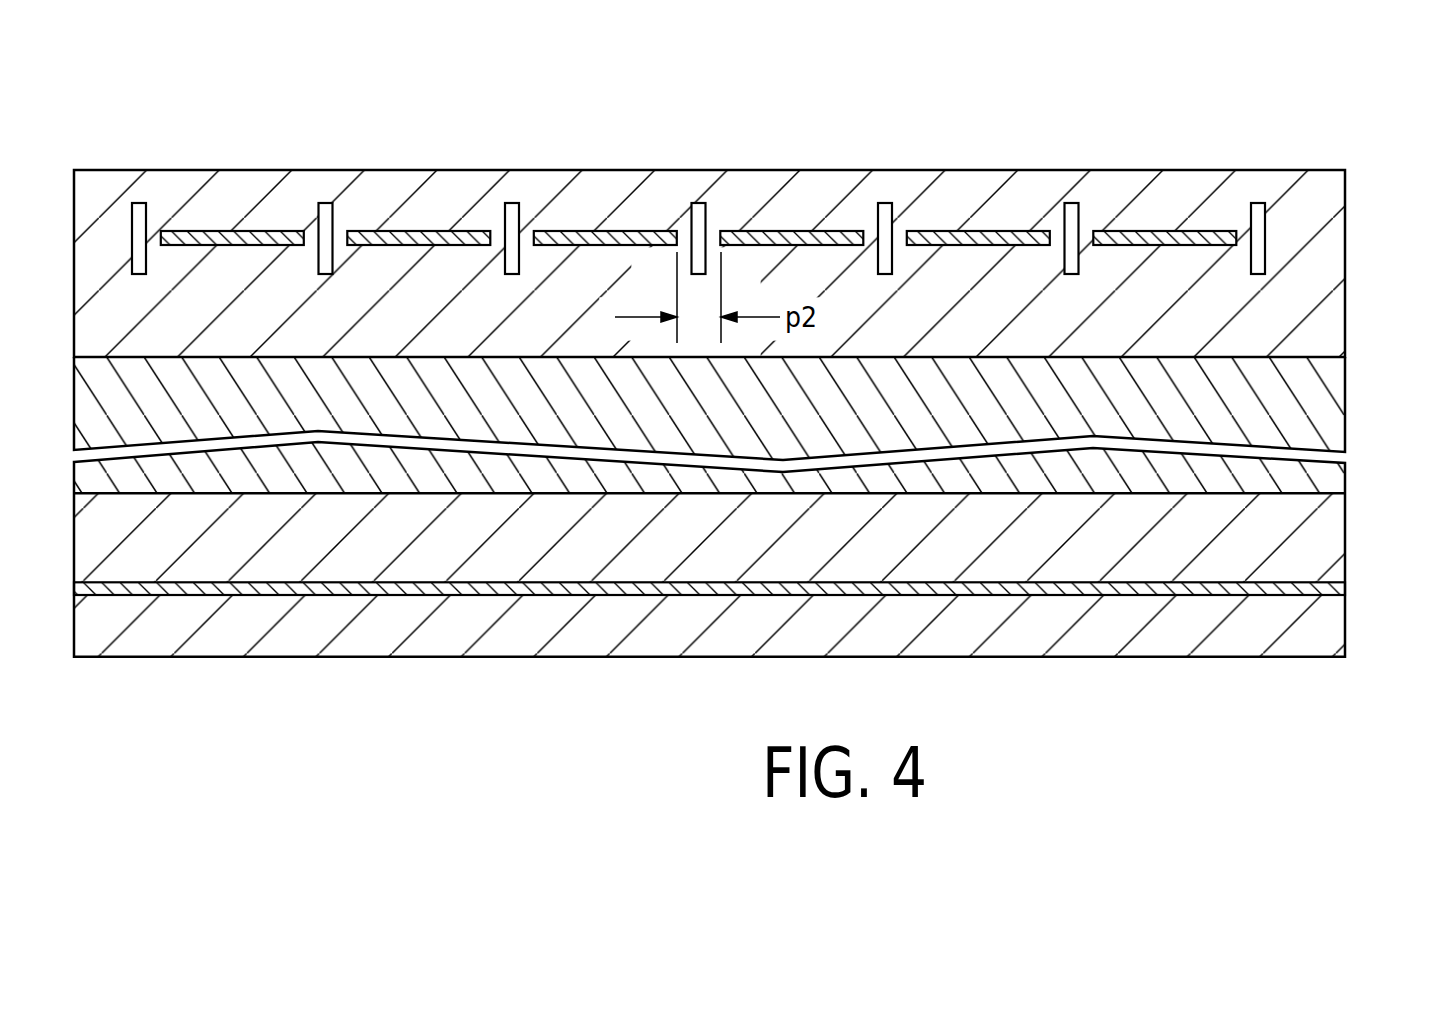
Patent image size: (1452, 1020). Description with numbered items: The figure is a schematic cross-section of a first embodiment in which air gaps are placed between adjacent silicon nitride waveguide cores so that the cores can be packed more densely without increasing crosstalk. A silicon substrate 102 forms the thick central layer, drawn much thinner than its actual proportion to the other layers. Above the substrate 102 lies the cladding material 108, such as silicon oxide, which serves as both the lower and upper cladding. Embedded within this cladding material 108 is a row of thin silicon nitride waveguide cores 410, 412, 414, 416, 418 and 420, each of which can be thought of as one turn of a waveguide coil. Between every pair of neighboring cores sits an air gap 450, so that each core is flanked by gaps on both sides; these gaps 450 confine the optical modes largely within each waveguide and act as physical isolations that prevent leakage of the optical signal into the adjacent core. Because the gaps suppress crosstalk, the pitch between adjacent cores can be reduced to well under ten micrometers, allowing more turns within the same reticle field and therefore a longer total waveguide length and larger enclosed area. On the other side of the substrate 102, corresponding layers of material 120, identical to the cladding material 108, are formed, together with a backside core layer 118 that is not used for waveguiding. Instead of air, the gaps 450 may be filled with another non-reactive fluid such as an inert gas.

The cladding material 108 is at (1355, 170).
The substrate 102 is at (1335, 422).
The backside layer material 120 is at (1355, 493).
The backside core layer 118 is at (1148, 590).
The air gaps 450 is at (139, 203).
The waveguide core 410 is at (235, 230).
The waveguide core 412 is at (423, 230).
The waveguide core 414 is at (609, 230).
The waveguide core 416 is at (797, 230).
The waveguide core 418 is at (984, 230).
The waveguide core 420 is at (1171, 230).